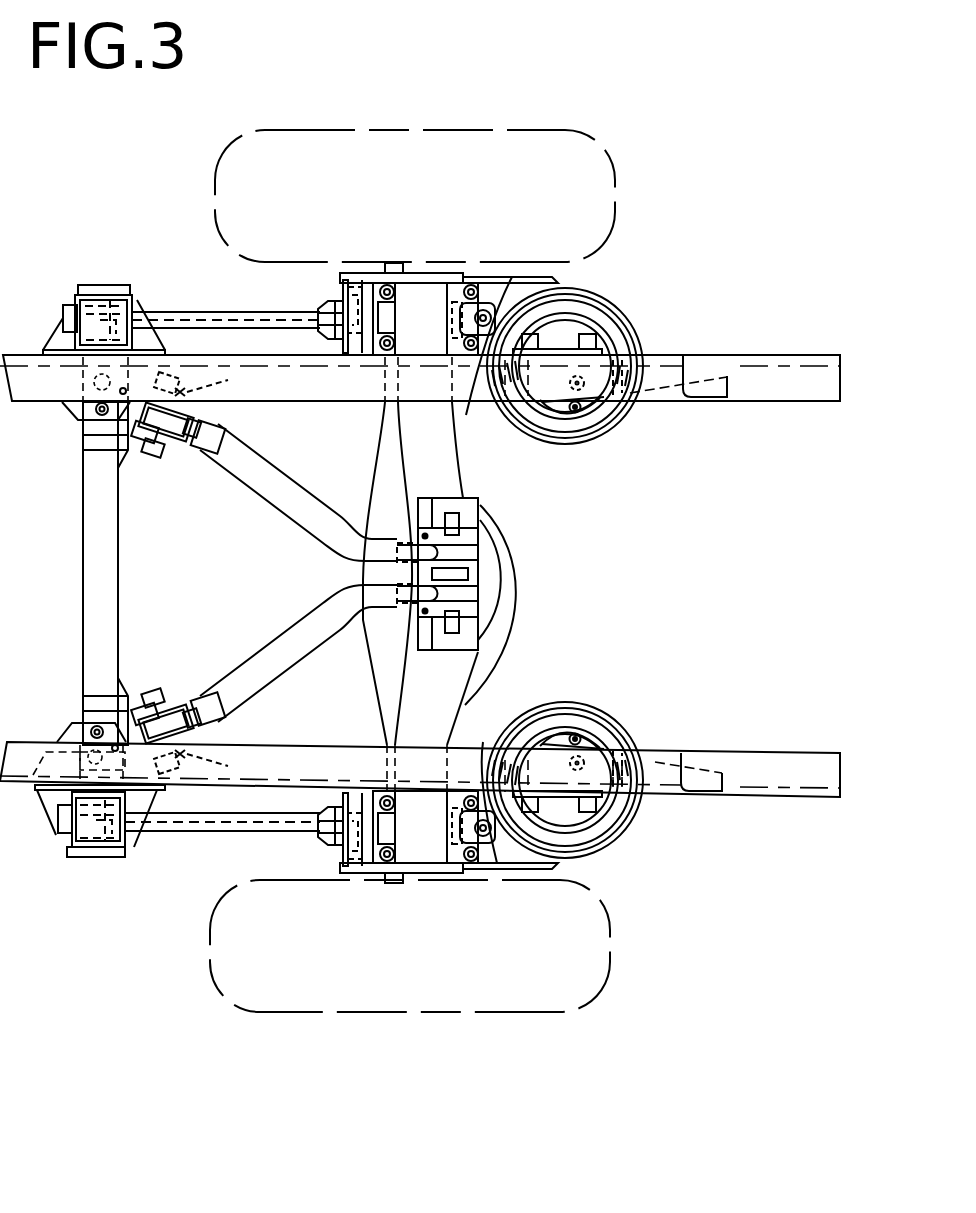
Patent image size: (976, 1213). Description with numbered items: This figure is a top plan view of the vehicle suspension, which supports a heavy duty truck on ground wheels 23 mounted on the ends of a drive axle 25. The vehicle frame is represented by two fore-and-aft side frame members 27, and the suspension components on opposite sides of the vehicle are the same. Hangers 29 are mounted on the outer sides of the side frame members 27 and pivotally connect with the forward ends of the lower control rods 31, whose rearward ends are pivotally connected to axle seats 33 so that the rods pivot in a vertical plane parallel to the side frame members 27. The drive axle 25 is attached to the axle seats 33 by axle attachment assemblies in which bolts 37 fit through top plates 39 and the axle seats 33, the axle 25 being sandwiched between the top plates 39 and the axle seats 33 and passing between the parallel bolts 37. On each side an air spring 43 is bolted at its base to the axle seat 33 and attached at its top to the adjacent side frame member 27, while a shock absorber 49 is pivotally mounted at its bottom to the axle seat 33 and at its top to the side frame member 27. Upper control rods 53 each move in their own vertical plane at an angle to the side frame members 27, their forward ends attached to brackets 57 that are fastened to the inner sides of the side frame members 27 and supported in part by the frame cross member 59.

The ground wheels 23 is at (630, 108).
The drive axle 25 is at (379, 485).
The side frame members 27 is at (758, 400).
The hangers 29 is at (57, 323).
The lower control rods 31 is at (228, 312).
The axle seats 33 is at (518, 278).
The bolts 37 is at (338, 296).
The top plates 39 is at (416, 282).
The air spring 43 is at (601, 428).
The shock absorber 49 is at (466, 415).
The upper control rods 53 is at (254, 493).
The brackets 57 is at (148, 452).
The frame cross member 59 is at (83, 604).